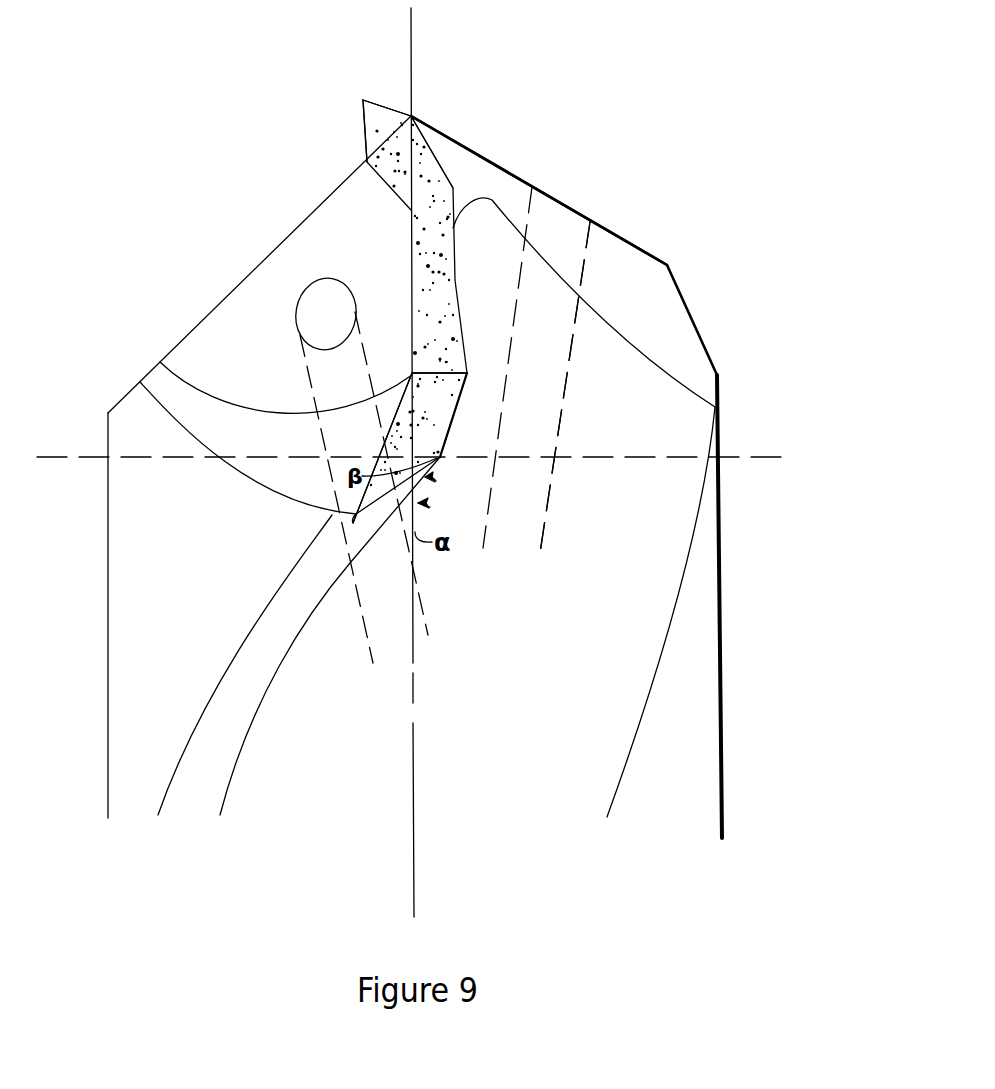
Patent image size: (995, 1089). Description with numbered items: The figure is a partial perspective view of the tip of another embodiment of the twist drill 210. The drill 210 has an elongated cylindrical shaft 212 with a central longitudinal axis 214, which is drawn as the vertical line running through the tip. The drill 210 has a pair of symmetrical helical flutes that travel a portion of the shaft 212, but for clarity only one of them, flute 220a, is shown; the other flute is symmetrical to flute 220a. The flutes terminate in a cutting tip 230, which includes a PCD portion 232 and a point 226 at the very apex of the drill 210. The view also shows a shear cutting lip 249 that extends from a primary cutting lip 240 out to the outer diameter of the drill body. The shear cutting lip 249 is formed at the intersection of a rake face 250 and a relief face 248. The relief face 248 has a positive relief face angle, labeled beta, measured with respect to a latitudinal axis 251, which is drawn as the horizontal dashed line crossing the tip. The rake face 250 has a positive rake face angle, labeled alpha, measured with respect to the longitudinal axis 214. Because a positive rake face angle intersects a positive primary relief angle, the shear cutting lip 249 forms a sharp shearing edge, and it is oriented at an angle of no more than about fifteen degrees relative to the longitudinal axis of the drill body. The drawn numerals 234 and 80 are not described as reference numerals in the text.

The twist drill 210 is at (618, 87).
The elongated cylindrical shaft 212 is at (687, 700).
The central longitudinal axis 214 is at (413, 683).
The flute 220a is at (655, 504).
The point 226 is at (411, 116).
The cutting tip 230 is at (677, 202).
The PCD portion 232 is at (363, 128).
The cutting edge 234 is at (400, 150).
The primary cutting lip 240 is at (428, 310).
The relief face 248 is at (420, 450).
The shear cutting lip 249 is at (463, 397).
The rake face 250 is at (406, 490).
The latitudinal axis 251 is at (57, 457).
The coolant hole 80 is at (322, 305).